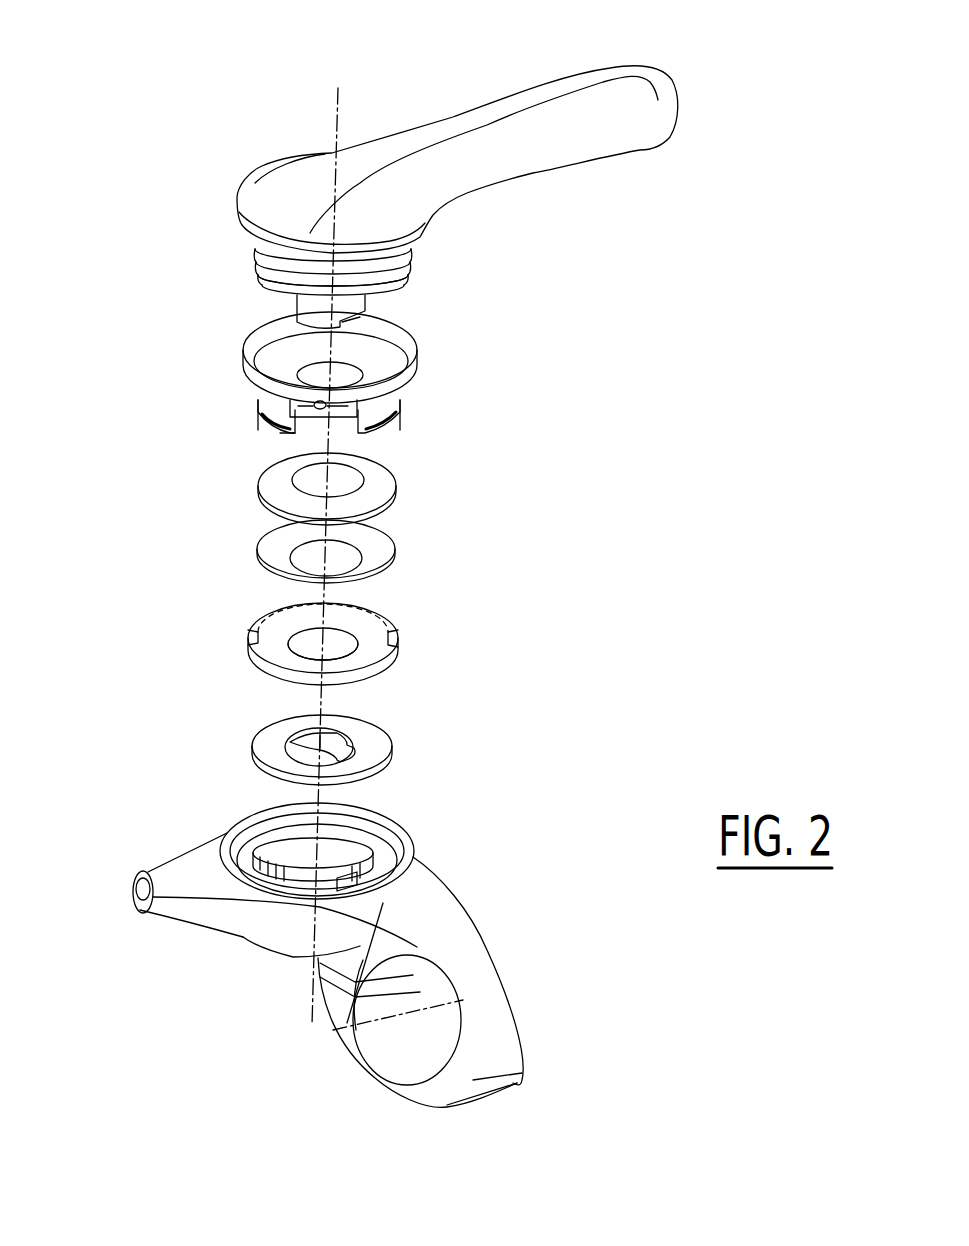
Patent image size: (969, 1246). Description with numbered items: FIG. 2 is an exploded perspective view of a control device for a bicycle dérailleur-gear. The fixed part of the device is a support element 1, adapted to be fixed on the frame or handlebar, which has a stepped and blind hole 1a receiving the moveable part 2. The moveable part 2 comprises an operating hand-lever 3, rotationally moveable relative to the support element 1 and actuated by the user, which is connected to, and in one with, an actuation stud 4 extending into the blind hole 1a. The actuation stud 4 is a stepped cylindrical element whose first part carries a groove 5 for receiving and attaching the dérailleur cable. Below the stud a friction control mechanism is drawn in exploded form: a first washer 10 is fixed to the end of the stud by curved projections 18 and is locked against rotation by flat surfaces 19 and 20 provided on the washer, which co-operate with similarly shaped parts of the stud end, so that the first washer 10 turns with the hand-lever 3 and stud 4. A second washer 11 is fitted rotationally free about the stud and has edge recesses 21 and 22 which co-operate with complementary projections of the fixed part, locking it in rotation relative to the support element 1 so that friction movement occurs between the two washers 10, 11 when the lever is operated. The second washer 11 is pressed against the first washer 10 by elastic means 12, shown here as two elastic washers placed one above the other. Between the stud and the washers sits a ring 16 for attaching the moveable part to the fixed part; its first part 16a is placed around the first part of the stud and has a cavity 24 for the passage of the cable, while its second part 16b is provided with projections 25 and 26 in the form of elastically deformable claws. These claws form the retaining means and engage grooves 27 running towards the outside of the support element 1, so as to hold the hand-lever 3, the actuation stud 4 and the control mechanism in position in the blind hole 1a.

The support element 1 is at (343, 949).
The stepped and blind hole 1a is at (379, 859).
The moveable part 2 is at (205, 135).
The operating hand-lever 3 is at (453, 92).
The actuation stud 4 is at (420, 262).
The groove 5 is at (281, 272).
The first washer 10 is at (373, 728).
The second washer 11 is at (327, 628).
The elastic means 12 is at (422, 518).
The ring 16 is at (346, 431).
The first part of the ring 16a is at (389, 394).
The second part of the ring 16b is at (283, 435).
The curved projections 18 is at (388, 327).
The flat surface 19 is at (350, 748).
The flat surface 20 is at (345, 742).
The recess 21 is at (398, 650).
The recess 22 is at (248, 638).
The cavity 24 is at (290, 401).
The projection 25 is at (390, 430).
The projection 26 is at (287, 427).
The grooves 27 is at (355, 889).